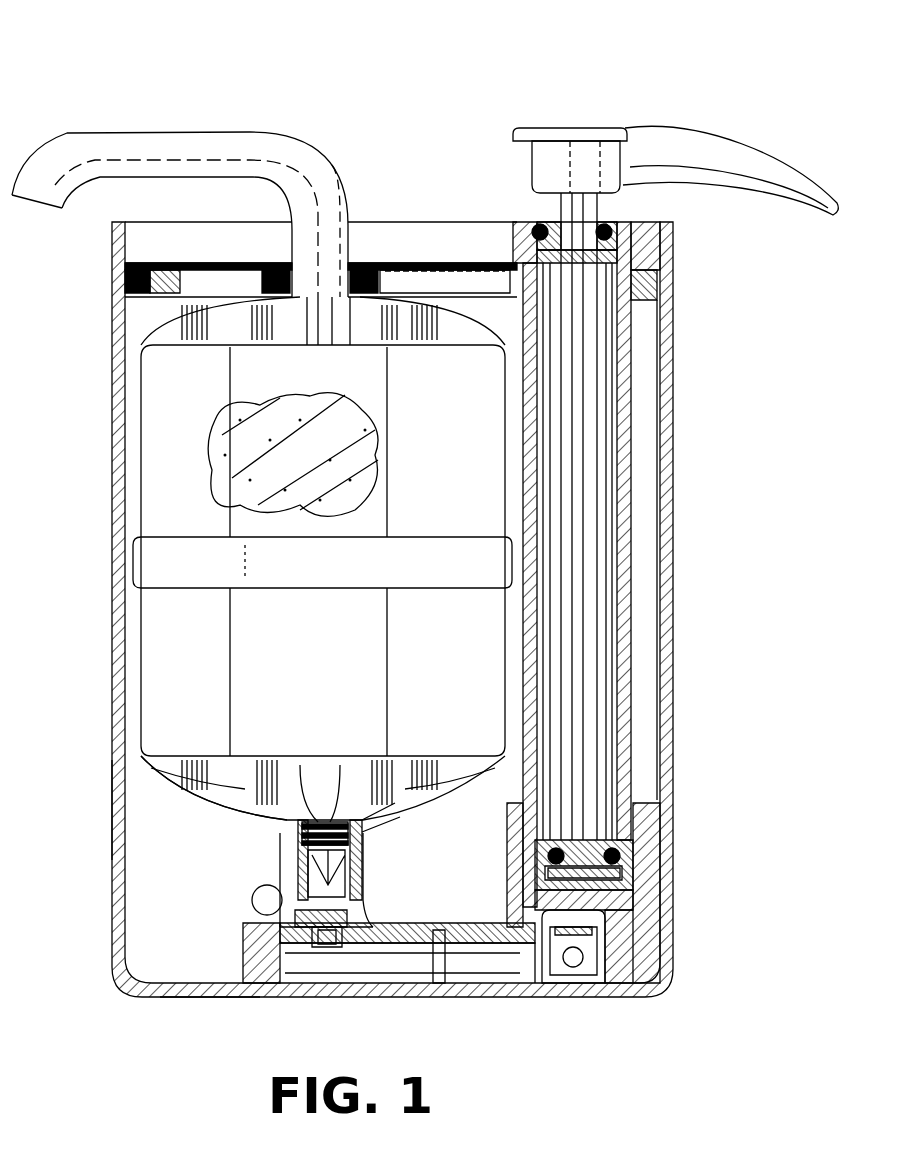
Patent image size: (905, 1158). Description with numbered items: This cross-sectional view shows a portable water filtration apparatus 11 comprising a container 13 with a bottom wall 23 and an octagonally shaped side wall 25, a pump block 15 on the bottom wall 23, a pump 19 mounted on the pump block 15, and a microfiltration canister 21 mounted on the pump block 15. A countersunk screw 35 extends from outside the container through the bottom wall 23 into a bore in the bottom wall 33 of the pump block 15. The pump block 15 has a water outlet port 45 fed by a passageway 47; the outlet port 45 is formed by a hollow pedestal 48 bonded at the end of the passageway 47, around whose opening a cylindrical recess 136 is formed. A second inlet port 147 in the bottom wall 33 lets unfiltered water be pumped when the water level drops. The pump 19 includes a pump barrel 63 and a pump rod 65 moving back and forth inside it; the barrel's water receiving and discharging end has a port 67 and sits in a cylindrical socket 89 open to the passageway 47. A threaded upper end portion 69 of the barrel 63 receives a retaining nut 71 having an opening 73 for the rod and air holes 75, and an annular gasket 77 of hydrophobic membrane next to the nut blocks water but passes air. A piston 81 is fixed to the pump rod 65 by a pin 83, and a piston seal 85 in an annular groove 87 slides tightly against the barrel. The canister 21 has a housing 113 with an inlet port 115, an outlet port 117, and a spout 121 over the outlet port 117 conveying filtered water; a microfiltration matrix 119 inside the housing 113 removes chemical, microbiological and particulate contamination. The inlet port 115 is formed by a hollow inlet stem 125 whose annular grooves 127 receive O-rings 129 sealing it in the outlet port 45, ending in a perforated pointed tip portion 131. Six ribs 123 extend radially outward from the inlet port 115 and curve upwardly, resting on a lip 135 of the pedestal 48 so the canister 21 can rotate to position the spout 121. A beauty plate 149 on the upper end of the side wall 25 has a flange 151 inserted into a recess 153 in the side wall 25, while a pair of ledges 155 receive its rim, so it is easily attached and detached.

The portable water filtration apparatus 11 is at (168, 80).
The container 13 is at (112, 435).
The pump block 15 is at (325, 997).
The pump 19 is at (620, 440).
The microfiltration canister 21 is at (170, 655).
The bottom wall 23 is at (220, 997).
The side wall 25 is at (112, 800).
The bottom wall 33 is at (372, 985).
The screw 35 is at (466, 997).
The water outlet port 45 is at (348, 885).
The passageway 47 is at (425, 997).
The hollow pedestal 48 is at (278, 880).
The pump barrel 63 is at (620, 530).
The pump rod 65 is at (585, 330).
The port 67 is at (633, 880).
The threaded upper end portion 69 is at (662, 245).
The retaining nut 71 is at (540, 230).
The opening 73 is at (590, 200).
The air holes 75 is at (545, 228).
The annular gasket 77 is at (535, 245).
The piston 81 is at (615, 830).
The pin 83 is at (610, 800).
The piston seal 85 is at (548, 866).
The annular groove 87 is at (545, 892).
The cylindrical socket 89 is at (655, 828).
The housing 113 is at (150, 483).
The canister inlet port 115 is at (298, 862).
The canister outlet port 117 is at (340, 255).
The microfiltration matrix 119 is at (310, 476).
The spout 121 is at (240, 140).
The ribs 123 is at (178, 330).
The inlet stem 125 is at (352, 835).
The annular grooves 127 is at (315, 793).
The O-rings 129 is at (385, 812).
The perforated pointed tip portion 131 is at (262, 898).
The lip 135 is at (262, 814).
The cylindrical recess 136 is at (445, 286).
The second inlet port 147 is at (528, 240).
The beauty plate 149 is at (135, 262).
The flange 151 is at (128, 285).
The recess 153 is at (150, 290).
The ledges 155 is at (665, 312).